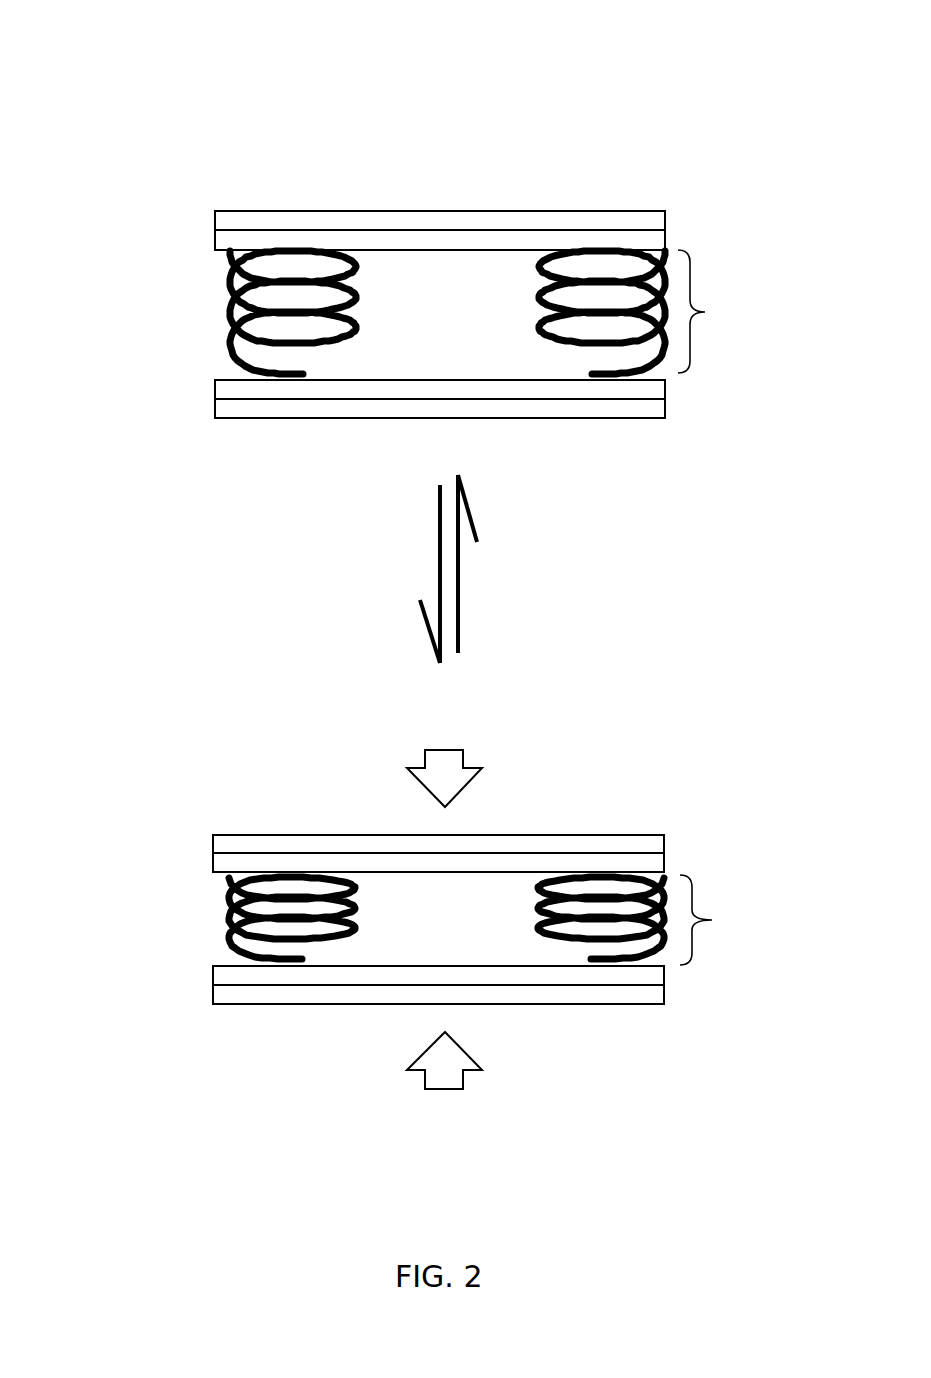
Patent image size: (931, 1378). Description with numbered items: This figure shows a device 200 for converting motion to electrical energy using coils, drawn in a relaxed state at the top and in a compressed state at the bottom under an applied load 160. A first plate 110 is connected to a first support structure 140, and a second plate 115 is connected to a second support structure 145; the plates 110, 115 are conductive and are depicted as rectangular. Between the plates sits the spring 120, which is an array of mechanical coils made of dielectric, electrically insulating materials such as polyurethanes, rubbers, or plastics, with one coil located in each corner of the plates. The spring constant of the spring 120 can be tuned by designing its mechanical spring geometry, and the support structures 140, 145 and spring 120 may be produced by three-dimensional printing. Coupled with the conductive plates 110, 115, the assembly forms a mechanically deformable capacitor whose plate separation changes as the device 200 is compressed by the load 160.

The device 200 is at (651, 68).
The first plate 110 is at (258, 238).
The first support structure 140 is at (287, 218).
The second plate 115 is at (257, 388).
The second support structure 145 is at (298, 408).
The spring 120 is at (198, 331).
The compressive force 160 is at (465, 734).